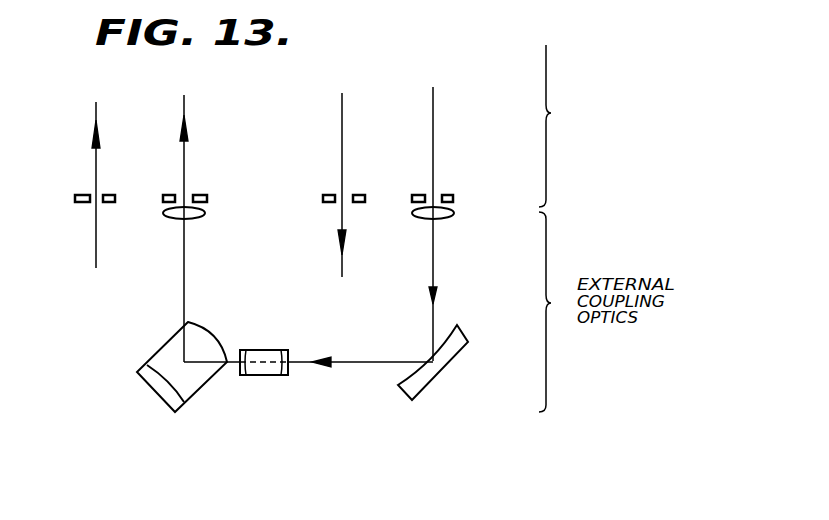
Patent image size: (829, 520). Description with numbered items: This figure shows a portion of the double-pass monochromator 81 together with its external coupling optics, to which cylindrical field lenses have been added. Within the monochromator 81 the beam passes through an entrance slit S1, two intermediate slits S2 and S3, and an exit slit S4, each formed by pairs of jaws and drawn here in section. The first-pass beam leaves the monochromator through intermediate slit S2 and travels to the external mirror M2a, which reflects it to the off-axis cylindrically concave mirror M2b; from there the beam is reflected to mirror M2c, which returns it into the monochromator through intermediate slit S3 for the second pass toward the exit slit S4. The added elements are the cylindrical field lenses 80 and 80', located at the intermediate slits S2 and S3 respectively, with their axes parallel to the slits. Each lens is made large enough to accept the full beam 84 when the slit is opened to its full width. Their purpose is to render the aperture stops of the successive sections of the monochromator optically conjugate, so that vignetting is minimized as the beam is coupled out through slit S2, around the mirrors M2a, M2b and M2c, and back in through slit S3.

The entrance slit S1 is at (90, 193).
The intermediate slit S2 is at (435, 195).
The intermediate slit S3 is at (192, 192).
The exit slit S4 is at (336, 204).
The cylindrical field lens 80 is at (444, 231).
The cylindrical field lens 80' is at (168, 235).
The monochromator 81 is at (659, 126).
The full beam 84 is at (184, 285).
The external mirror M2a is at (426, 388).
The off-axis cylindrically concave mirror M2b is at (284, 377).
The mirror M2c is at (182, 402).